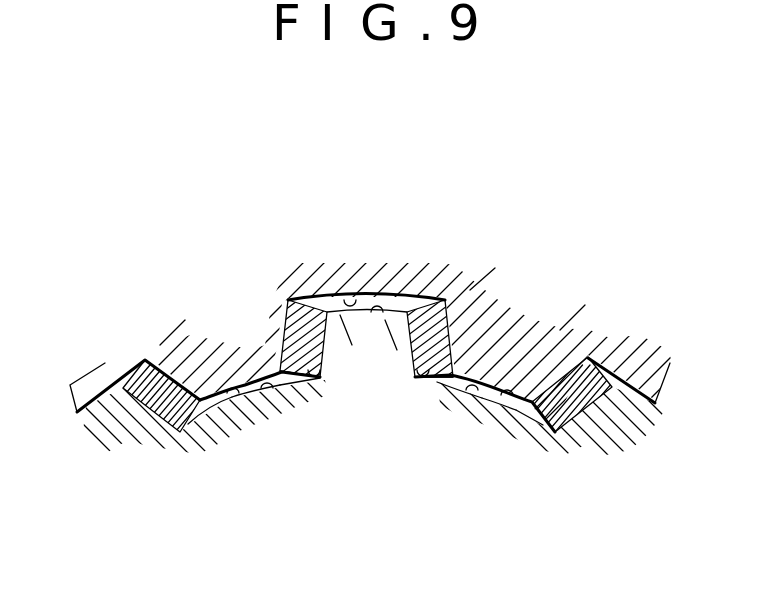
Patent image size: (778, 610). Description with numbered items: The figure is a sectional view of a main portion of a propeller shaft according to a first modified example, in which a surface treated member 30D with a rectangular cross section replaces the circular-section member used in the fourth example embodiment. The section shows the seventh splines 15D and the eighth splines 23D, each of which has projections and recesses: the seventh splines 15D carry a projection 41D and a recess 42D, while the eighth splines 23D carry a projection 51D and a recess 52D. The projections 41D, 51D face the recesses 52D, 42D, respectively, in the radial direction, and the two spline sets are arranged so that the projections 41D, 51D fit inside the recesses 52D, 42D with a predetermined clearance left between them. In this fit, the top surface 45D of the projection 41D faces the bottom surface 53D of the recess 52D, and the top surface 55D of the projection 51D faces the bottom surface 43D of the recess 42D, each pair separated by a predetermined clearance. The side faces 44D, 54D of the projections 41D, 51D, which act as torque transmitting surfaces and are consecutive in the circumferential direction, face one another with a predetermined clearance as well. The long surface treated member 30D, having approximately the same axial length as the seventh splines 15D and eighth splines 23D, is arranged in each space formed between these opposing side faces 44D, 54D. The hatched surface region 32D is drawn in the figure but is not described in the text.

The surface treated member 30D is at (286, 318).
The surface portion of steel sheet 32D is at (276, 321).
The eighth splines 23D is at (123, 347).
The seventh splines 15D is at (130, 510).
The projection 51D is at (160, 427).
The side faces (torque transmitting surfaces) 54D is at (296, 298).
The bottom surface 53D is at (359, 290).
The recess 52D is at (482, 178).
The top surface 45D is at (371, 314).
The side faces (torque transmitting surfaces) 44D is at (192, 428).
The bottom surface 43D is at (248, 405).
The recess 42D is at (353, 530).
The top surface 55D is at (223, 390).
The projection 41D is at (462, 322).